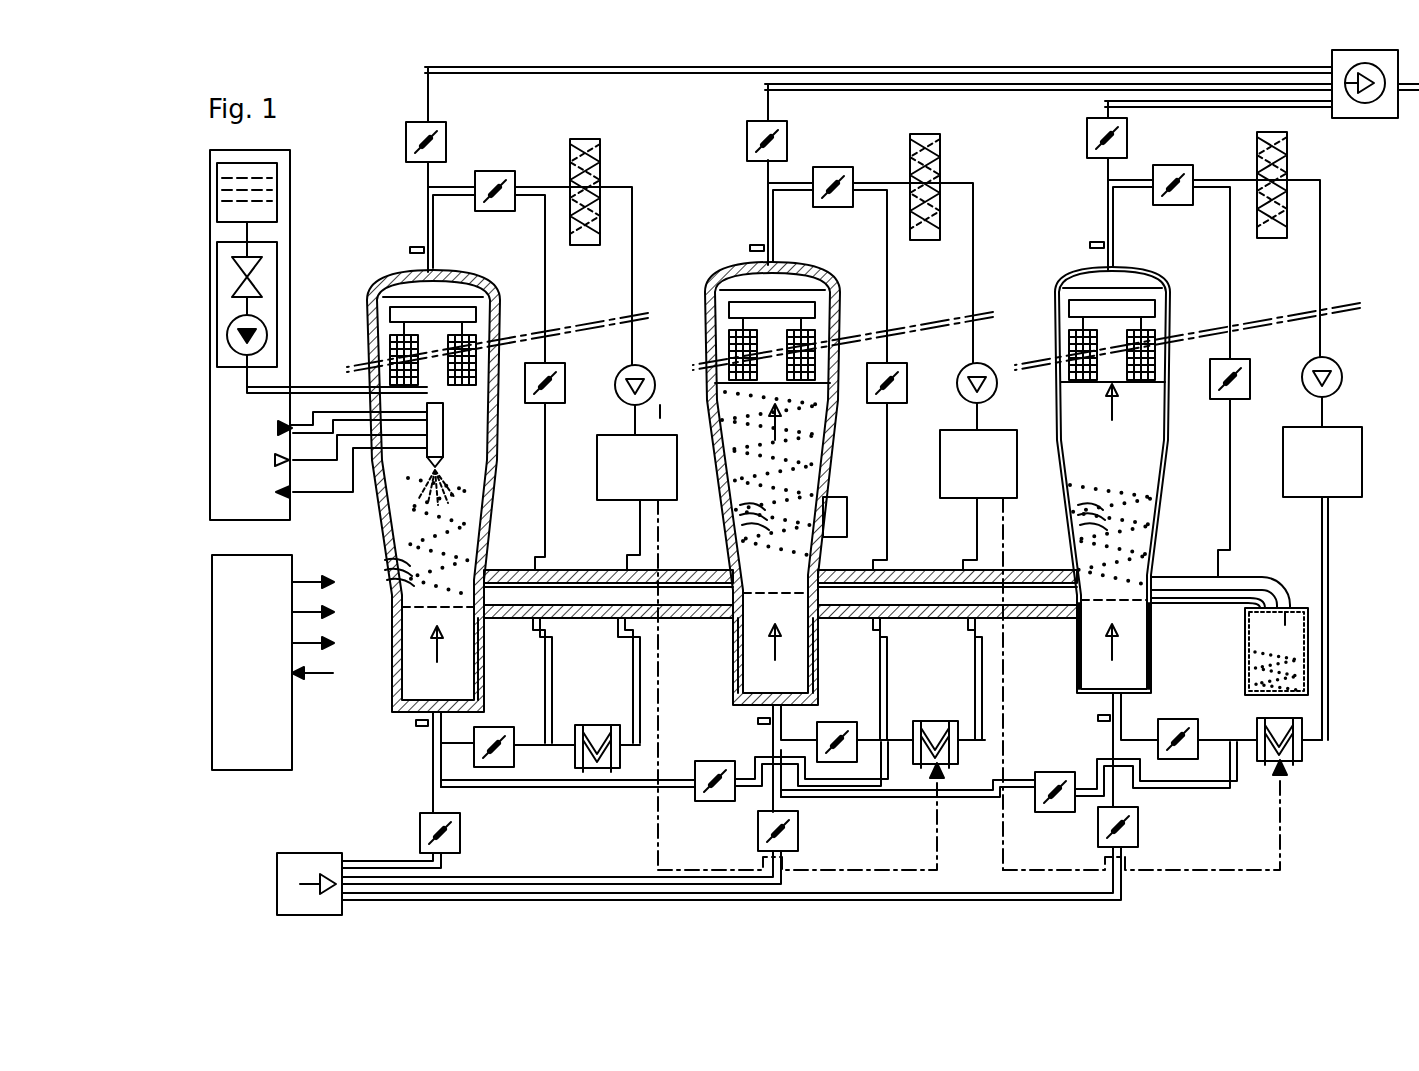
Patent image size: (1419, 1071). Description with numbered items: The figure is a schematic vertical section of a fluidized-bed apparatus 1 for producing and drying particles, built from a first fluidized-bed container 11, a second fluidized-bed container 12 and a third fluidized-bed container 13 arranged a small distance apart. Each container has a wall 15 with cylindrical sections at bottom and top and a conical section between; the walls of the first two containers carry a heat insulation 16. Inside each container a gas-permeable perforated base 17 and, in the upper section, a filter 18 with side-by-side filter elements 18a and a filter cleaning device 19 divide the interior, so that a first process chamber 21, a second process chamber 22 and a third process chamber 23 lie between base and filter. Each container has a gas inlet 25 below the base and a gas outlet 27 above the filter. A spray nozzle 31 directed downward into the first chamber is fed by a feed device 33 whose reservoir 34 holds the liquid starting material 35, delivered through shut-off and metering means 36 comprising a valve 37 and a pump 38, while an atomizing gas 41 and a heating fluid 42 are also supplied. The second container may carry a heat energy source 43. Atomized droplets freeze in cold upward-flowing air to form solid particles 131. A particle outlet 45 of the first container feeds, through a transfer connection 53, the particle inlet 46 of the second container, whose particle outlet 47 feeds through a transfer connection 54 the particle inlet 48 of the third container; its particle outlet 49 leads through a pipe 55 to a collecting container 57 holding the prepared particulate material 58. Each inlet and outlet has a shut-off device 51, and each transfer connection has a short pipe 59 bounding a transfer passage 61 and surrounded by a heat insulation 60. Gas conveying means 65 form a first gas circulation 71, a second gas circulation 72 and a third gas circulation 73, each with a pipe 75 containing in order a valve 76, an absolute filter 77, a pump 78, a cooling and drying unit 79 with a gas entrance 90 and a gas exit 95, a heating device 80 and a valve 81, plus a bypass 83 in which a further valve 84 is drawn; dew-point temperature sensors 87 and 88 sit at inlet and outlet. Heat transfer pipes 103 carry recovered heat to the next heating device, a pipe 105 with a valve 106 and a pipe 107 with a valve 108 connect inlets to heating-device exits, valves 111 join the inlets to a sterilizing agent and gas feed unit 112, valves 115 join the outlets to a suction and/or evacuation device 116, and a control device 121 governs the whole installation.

The fluidized-bed apparatus 1 is at (418, 71).
The first fluidized-bed container 11 is at (368, 283).
The second fluidized-bed container 12 is at (708, 278).
The third fluidized-bed container 13 is at (1058, 276).
The wall 15 is at (375, 318).
The heat insulation 16 is at (370, 356).
The perforated base 17 is at (400, 625).
The filter 18 is at (476, 345).
The filter elements 18a is at (368, 383).
The filter cleaning device 19 is at (476, 312).
The first process chamber 21 is at (395, 535).
The second process chamber 22 is at (815, 465).
The third process chamber 23 is at (1153, 492).
The gas inlet 25 is at (433, 708).
The gas outlet 27 is at (435, 268).
The spray nozzle 31 is at (450, 462).
The feed device 33 is at (212, 152).
The reservoir 34 is at (217, 207).
The starting material 35 is at (262, 168).
The shut-off and metering means 36 is at (217, 278).
The valve 37 is at (240, 290).
The pump 38 is at (232, 335).
The atomizing gas 41 is at (272, 460).
The heating fluid 42 is at (272, 427).
The heat energy source 43 is at (847, 522).
The particle outlet 45 is at (485, 650).
The particle inlet 46 is at (735, 650).
The particle outlet 47 is at (820, 650).
The particle inlet 48 is at (1078, 650).
The particle outlet 49 is at (1153, 648).
The shut-off device 51 is at (510, 570).
The transfer connection 53 is at (625, 570).
The transfer connection 54 is at (960, 570).
The pipe 55 is at (1205, 577).
The collecting container 57 is at (1308, 638).
The prepared particulate material 58 is at (1290, 640).
The pipe 59 is at (562, 625).
The heat insulation 60 is at (632, 640).
The transfer passage 61 is at (600, 595).
The gas conveying means 65 is at (425, 212).
The first gas circulation 71 is at (632, 187).
The second gas circulation 72 is at (942, 180).
The third gas circulation 73 is at (1290, 183).
The pipe 75 is at (452, 187).
The valve 76 is at (495, 171).
The absolute filter 77 is at (580, 139).
The pump 78 is at (615, 380).
The cooling and drying unit 79 is at (597, 480).
The heating device 80 is at (598, 770).
The valve 81 is at (515, 745).
The bypass 83 is at (546, 294).
The valve 84 is at (553, 403).
The dew-point temperature sensor 87 is at (418, 725).
The dew-point temperature sensor 88 is at (410, 250).
The gas entrance 90 is at (660, 412).
The gas exit 95 is at (655, 503).
The heat transfer pipe 103 is at (1003, 750).
The pipe 105 is at (545, 787).
The valve 106 is at (715, 801).
The pipe 107 is at (850, 797).
The valve 108 is at (1058, 812).
The valve 111 is at (420, 838).
The sterilizing agent and gas feed unit 112 is at (277, 868).
The valve 115 is at (407, 135).
The suction and/or evacuation device 116 is at (1355, 118).
The control device 121 is at (250, 772).
The solid particles 131 is at (387, 583).